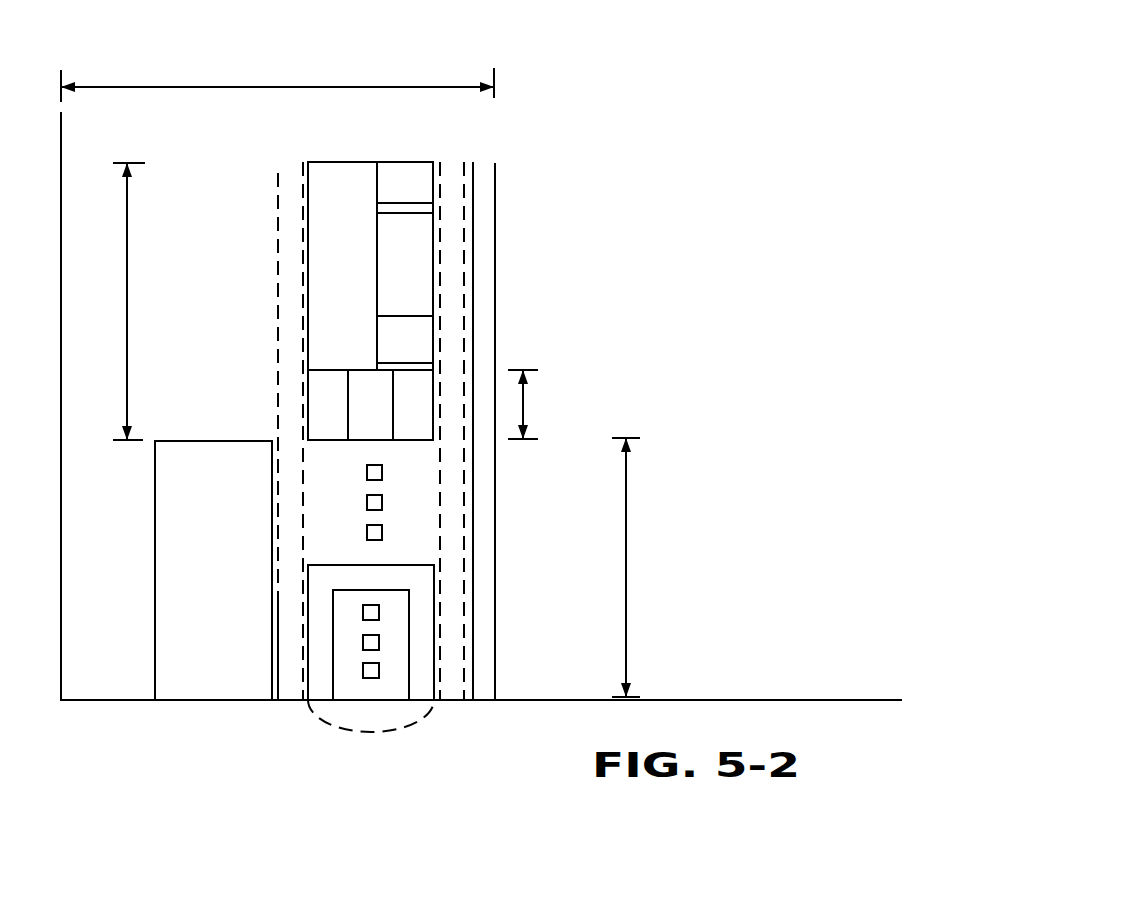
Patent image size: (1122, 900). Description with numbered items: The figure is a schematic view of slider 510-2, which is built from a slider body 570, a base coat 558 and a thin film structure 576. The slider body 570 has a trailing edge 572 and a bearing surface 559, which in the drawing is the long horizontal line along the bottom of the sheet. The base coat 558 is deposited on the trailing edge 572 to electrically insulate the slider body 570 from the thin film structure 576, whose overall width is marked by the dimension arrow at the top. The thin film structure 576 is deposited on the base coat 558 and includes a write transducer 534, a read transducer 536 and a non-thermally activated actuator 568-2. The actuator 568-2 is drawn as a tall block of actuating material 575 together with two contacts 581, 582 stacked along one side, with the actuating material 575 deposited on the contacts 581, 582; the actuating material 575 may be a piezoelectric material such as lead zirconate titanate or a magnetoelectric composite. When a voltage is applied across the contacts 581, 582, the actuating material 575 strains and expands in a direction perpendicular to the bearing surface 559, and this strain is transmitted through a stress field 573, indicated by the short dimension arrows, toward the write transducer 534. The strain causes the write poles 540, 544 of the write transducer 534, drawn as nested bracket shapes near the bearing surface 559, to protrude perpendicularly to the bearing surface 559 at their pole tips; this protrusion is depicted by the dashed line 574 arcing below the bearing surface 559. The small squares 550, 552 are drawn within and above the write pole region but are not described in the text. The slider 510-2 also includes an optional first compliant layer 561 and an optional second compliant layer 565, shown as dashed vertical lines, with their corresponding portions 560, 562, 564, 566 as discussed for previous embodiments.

The slider 510-2 is at (667, 124).
The write transducer 534 is at (626, 627).
The read transducer 536 is at (243, 622).
The write pole 540 is at (323, 677).
The write pole 544 is at (420, 673).
The pixel elements 550 is at (379, 612).
The pixel elements 552 is at (413, 473).
The base coat 558 is at (490, 188).
The bearing surface 559 is at (815, 700).
The portion of first compliant layer 560 is at (452, 655).
The first compliant layer 561 is at (465, 272).
The portion of first compliant layer 562 is at (448, 172).
The portion of second compliant layer 564 is at (287, 685).
The second compliant layer 565 is at (278, 298).
The portion of second compliant layer 566 is at (285, 190).
The non-thermally activated actuator 568-2 is at (128, 232).
The slider body 570 is at (783, 408).
The trailing edge 572 is at (497, 680).
The stress field 573 is at (523, 402).
The dashed line 574 is at (363, 732).
The actuating material 575 is at (370, 243).
The thin film structure 576 is at (346, 78).
The contact 581 is at (405, 187).
The contact 582 is at (405, 343).